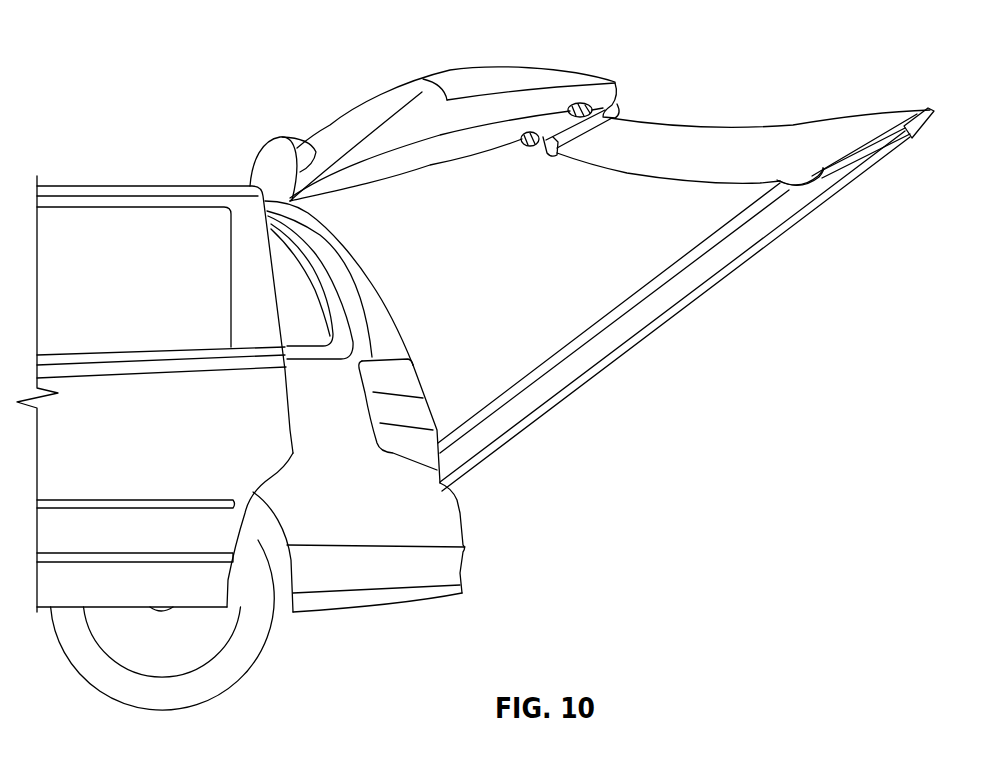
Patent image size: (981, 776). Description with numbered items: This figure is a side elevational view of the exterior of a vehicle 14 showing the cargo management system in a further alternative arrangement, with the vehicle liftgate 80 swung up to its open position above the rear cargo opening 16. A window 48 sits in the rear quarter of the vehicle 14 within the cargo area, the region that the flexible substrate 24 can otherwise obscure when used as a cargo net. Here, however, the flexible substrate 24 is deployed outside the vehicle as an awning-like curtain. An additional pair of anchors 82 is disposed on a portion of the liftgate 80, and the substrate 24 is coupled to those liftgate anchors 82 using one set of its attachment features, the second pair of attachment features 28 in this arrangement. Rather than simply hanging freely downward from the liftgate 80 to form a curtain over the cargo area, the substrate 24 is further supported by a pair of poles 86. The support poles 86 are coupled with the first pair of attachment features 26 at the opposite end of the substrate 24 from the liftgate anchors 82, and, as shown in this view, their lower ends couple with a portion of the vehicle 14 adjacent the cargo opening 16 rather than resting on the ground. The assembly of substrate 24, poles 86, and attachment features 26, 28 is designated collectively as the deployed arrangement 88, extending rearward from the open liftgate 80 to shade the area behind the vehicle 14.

The vehicle 14 is at (222, 172).
The cargo opening 16 is at (443, 372).
The window 48 is at (310, 310).
The vehicle liftgate 80 is at (503, 95).
The additional pair of anchors 82 is at (570, 103).
The second pair of attachment features 28 is at (615, 82).
The canopy assembly 88 is at (686, 263).
The flexible substrate 24 is at (742, 147).
The first pair of attachment features 26 is at (918, 108).
The pair of poles 86 is at (613, 307).